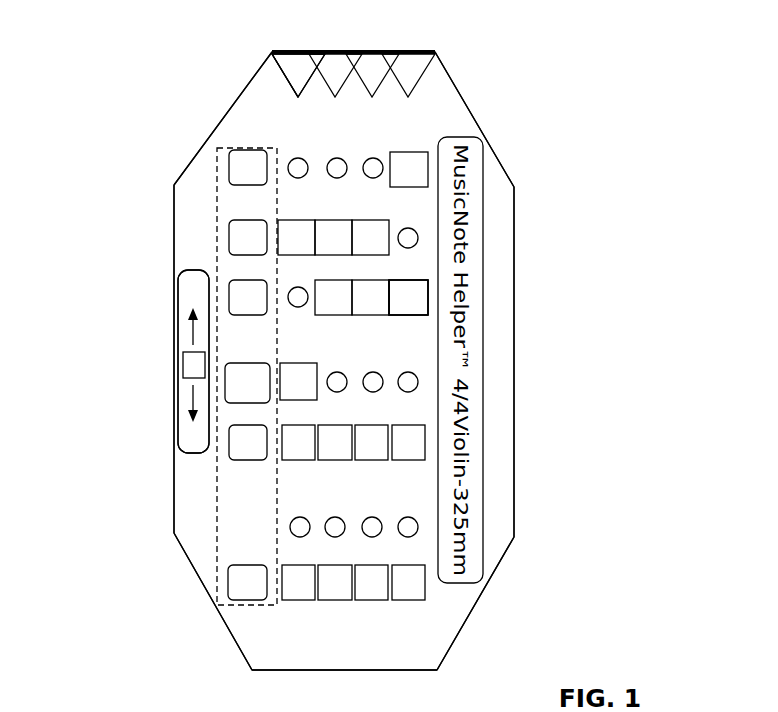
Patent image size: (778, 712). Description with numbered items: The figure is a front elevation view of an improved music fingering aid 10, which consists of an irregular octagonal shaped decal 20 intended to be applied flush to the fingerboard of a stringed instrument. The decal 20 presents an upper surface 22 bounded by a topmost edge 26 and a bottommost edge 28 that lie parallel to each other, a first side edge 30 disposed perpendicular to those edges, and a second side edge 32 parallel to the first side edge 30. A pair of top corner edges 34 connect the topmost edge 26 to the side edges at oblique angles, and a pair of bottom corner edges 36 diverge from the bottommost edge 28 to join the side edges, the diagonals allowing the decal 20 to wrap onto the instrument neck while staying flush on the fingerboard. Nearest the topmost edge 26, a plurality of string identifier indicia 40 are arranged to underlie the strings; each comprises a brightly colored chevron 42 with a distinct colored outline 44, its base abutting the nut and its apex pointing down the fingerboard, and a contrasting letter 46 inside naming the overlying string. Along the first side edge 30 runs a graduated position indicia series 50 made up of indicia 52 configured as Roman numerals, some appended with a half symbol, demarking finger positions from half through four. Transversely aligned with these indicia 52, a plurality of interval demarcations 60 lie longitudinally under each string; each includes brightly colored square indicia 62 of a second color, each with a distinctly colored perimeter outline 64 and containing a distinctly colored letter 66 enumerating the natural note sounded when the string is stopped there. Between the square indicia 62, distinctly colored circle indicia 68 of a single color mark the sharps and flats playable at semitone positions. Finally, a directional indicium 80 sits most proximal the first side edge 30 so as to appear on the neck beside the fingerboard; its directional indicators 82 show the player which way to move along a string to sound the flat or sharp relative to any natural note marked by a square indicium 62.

The music fingering aid 10 is at (622, 66).
The decal 20 is at (119, 270).
The upper surface 22 is at (331, 350).
The topmost edge 26 is at (398, 51).
The bottommost edge 28 is at (400, 672).
The first side edge 30 is at (175, 460).
The second side edge 32 is at (515, 420).
The top corner edges 34 is at (225, 118).
The bottom corner edges 36 is at (216, 612).
The string identifier indicia 40 is at (430, 71).
The chevron 42 is at (285, 50).
The colored outline 44 is at (284, 80).
The letter 46 is at (288, 72).
The graduated position indicia series 50 is at (210, 227).
The indicia 52 is at (222, 528).
The interval demarcations 60 is at (385, 232).
The square indicia 62 is at (425, 285).
The perimeter outline 64 is at (406, 315).
The letter 66 is at (424, 298).
The circle indicia 68 is at (374, 517).
The directional indicium 80 is at (186, 393).
The directional indicators 82 is at (186, 333).